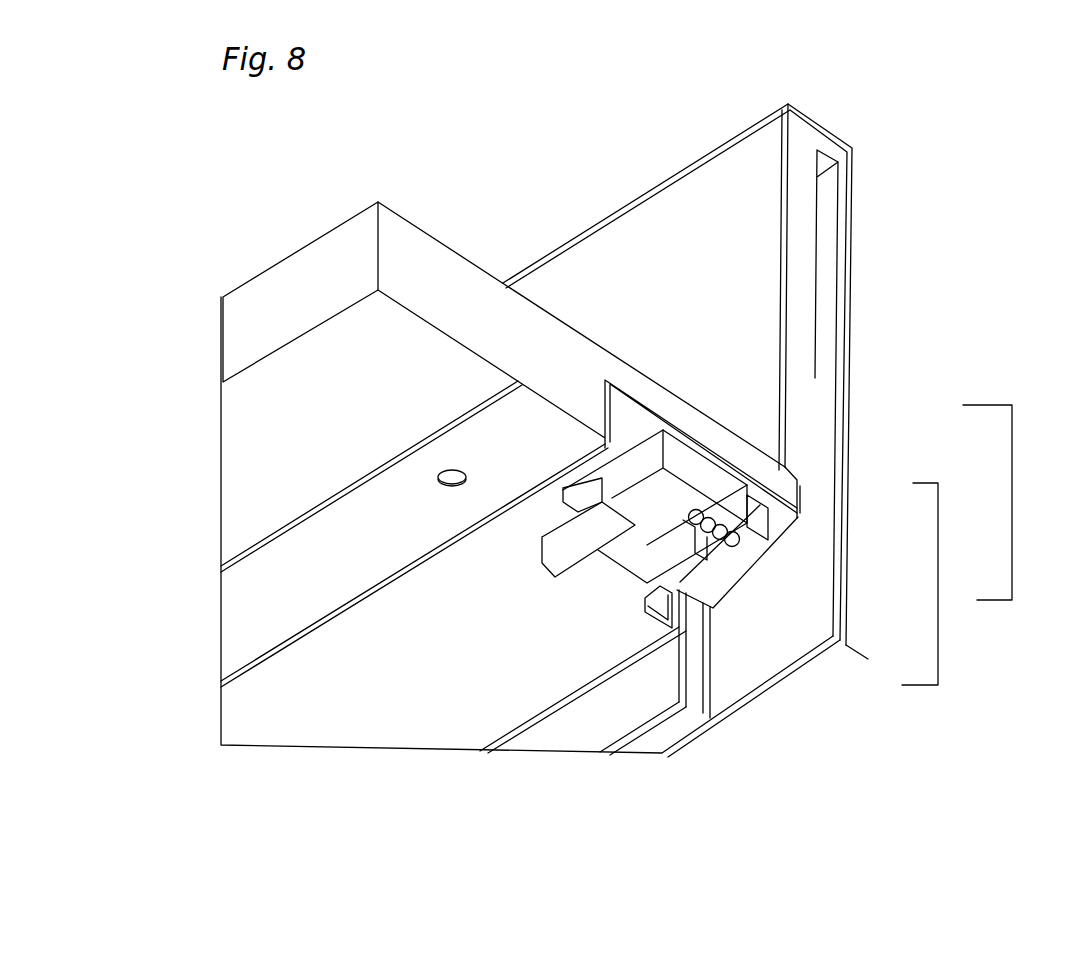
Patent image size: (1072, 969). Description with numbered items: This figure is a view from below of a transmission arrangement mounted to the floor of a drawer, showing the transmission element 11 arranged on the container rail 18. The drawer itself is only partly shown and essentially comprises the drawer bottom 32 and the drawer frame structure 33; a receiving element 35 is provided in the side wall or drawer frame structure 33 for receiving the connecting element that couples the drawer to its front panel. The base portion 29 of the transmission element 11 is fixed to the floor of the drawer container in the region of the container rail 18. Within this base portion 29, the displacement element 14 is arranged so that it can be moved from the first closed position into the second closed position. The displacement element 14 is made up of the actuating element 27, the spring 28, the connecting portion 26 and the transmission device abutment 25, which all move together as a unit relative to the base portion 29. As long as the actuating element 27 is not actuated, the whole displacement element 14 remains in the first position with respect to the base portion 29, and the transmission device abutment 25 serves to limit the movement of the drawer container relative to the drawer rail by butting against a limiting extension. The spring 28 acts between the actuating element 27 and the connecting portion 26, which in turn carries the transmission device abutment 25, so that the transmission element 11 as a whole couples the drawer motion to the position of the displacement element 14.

The transmission device 11 is at (1012, 500).
The displacement element 14 is at (938, 577).
The container rail 18 is at (452, 690).
The transmission device abutment 25 is at (558, 562).
The connecting portion 26 is at (685, 568).
The actuating element 27 is at (748, 567).
The spring 28 is at (738, 531).
The base portion 29 is at (672, 500).
The drawer bottom 32 is at (451, 297).
The drawer frame structure 33 is at (668, 218).
The receiving element 35 is at (825, 253).